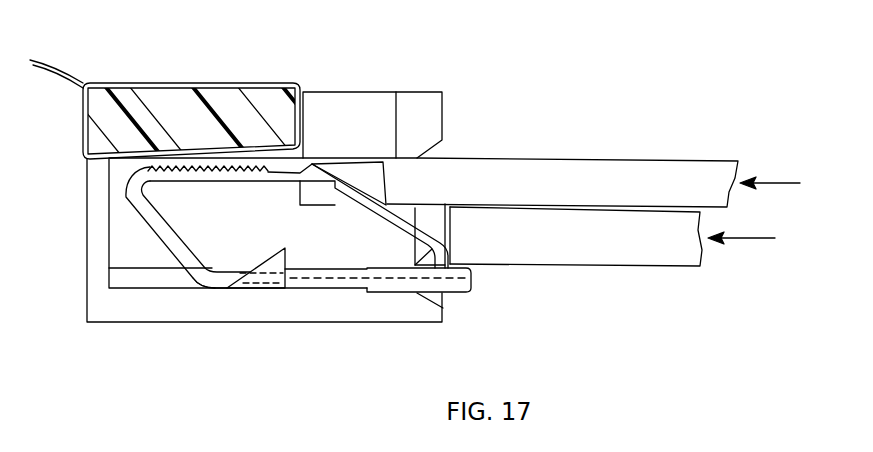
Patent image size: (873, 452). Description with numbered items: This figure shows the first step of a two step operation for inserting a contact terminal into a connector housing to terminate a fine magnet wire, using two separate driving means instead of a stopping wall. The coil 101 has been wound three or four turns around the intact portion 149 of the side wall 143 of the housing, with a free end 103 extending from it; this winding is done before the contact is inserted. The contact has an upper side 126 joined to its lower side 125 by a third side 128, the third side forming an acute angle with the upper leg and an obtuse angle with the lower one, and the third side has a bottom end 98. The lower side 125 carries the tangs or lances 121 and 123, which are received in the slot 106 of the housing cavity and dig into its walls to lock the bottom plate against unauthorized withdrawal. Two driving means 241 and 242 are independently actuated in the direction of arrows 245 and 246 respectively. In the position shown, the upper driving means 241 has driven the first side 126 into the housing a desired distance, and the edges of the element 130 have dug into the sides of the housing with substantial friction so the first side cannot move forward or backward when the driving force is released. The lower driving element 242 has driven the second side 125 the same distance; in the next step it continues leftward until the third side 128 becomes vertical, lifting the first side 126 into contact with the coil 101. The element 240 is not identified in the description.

The bottom end of end plate 98 is at (207, 289).
The coil 101 is at (167, 132).
The free end of coil 103 is at (65, 82).
The slot 106 is at (148, 278).
The tang 121 is at (398, 272).
The tang 123 is at (276, 265).
The lower side of contact 125 is at (257, 272).
The upper side of contact 126 is at (250, 162).
The third side of contact 128 is at (180, 238).
The top element 130 is at (372, 180).
The side wall 143 is at (368, 92).
The intact portion of side wall 149 is at (222, 100).
The stop block 240 is at (325, 193).
The driving means 241 is at (617, 172).
The driving means 242 is at (592, 250).
The arrow 245 is at (793, 183).
The arrow 246 is at (748, 240).